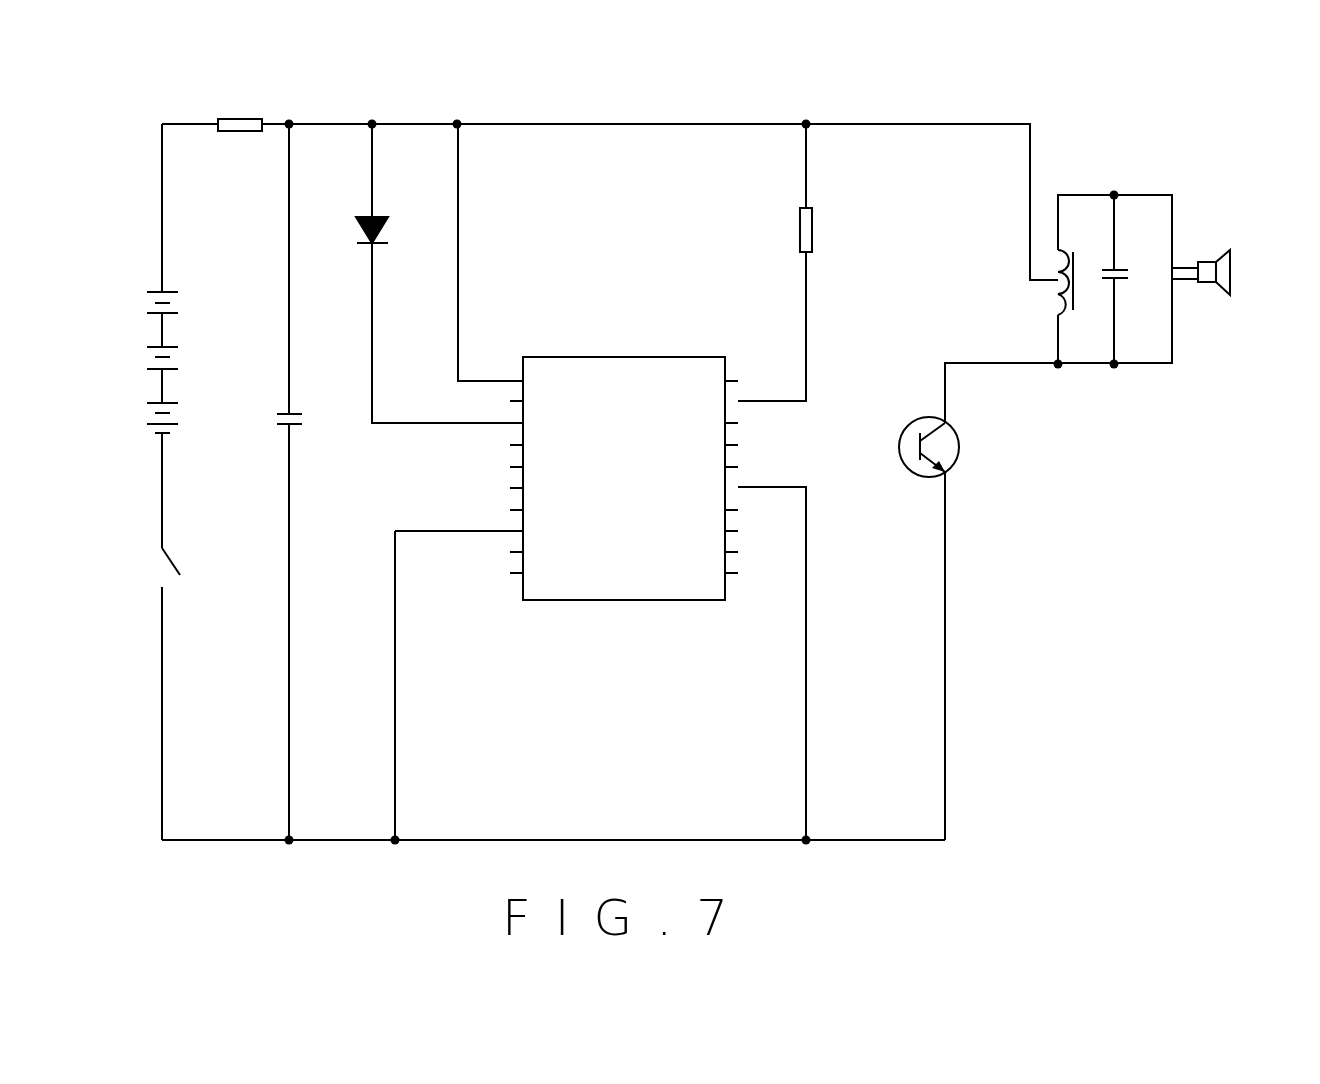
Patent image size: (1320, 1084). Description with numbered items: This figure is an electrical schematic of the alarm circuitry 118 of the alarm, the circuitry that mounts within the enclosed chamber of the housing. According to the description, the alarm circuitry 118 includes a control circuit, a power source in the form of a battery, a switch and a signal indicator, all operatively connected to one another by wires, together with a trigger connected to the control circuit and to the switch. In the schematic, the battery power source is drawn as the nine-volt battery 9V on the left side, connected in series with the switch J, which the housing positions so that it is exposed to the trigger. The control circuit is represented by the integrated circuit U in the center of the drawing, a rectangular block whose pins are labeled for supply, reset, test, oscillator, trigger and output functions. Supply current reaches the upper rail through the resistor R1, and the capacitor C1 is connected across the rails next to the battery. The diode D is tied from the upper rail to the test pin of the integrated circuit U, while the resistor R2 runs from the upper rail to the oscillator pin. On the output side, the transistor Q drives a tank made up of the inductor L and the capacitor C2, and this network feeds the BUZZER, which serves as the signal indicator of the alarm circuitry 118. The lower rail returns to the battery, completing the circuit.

The alarm circuitry 118 is at (998, 678).
The resistor R1 is at (240, 109).
The 9V battery 9V is at (183, 420).
The switch J is at (182, 694).
The capacitor C1 is at (306, 434).
The diode D is at (385, 230).
The integrated circuit U is at (624, 461).
The resistor R2 is at (826, 230).
The transistor Q is at (945, 447).
The inductor L is at (1075, 268).
The capacitor C2 is at (1131, 256).
The buzzer BUZZER is at (1232, 289).